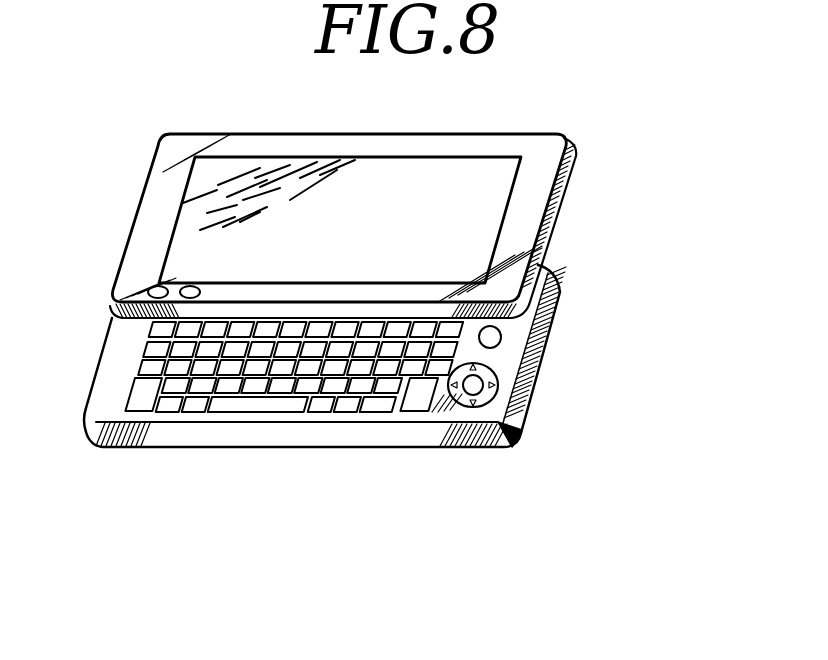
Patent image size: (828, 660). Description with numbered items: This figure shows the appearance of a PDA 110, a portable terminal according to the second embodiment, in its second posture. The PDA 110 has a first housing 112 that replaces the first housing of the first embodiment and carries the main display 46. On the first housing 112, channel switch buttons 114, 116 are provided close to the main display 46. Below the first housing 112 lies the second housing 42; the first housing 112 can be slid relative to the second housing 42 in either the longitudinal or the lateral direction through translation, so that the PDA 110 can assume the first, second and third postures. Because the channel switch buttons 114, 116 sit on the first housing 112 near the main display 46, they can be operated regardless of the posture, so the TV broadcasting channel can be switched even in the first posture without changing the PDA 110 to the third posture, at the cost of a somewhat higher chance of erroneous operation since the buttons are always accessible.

The PDA 110 is at (600, 101).
The first housing 112 is at (513, 135).
The main display 46 is at (218, 165).
The channel switch button 114 is at (157, 292).
The channel switch button 116 is at (189, 290).
The second housing 42 is at (543, 343).